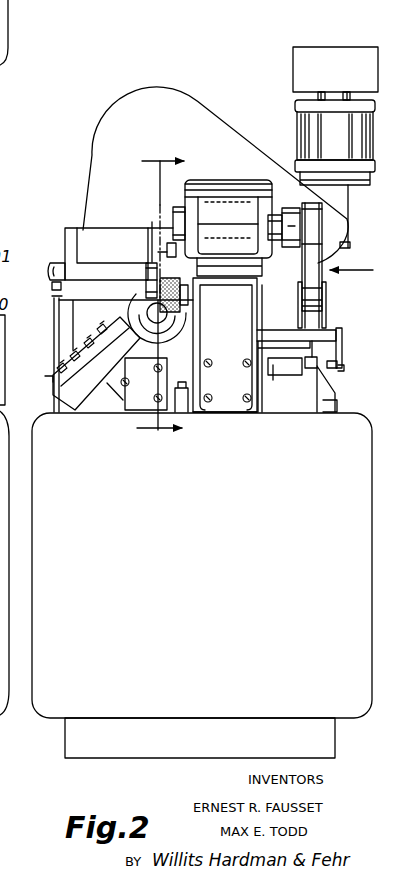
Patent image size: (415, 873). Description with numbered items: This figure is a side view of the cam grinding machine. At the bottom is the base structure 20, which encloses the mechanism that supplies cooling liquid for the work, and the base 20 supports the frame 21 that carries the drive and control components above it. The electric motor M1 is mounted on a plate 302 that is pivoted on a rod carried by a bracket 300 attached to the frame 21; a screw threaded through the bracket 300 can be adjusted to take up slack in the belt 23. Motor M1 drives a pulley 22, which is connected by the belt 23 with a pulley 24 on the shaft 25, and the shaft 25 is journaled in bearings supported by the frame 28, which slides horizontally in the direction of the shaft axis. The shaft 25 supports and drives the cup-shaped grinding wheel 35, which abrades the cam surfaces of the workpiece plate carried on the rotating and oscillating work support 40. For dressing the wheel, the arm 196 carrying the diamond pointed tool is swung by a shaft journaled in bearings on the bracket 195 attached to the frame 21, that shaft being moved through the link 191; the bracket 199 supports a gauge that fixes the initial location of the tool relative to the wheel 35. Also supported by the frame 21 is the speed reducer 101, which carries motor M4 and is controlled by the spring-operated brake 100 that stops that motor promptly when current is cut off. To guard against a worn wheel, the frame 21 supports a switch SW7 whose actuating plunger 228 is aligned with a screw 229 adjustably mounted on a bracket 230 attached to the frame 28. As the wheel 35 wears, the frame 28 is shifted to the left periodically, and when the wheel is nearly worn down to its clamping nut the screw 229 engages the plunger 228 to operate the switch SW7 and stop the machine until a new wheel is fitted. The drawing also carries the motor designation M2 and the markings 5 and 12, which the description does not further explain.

The base structure 20 is at (70, 720).
The frame 21 is at (97, 122).
The section line 5- 5 is at (156, 300).
The brake 100 is at (298, 52).
The motor M2 is at (298, 103).
The speed reducer 101 is at (348, 203).
The electric motor M1 is at (218, 180).
The plate 302 is at (234, 280).
The bracket 195 is at (68, 228).
The bracket 199 is at (152, 222).
The arm 196 is at (147, 270).
The cup-shaped grinding wheel 35 is at (180, 302).
The work support 40 is at (135, 307).
The link 191 is at (54, 304).
The shaft 25 is at (192, 307).
The bracket 300 is at (233, 397).
The frame 28 is at (289, 333).
The pulley 22 is at (293, 208).
The belt 23 is at (315, 232).
The pulley 24 is at (326, 305).
The direction arrow 12 is at (347, 272).
The bracket 230 is at (343, 340).
The screw 229 is at (332, 368).
The switch SW7 is at (292, 379).
The actuating plunger 228 is at (327, 410).